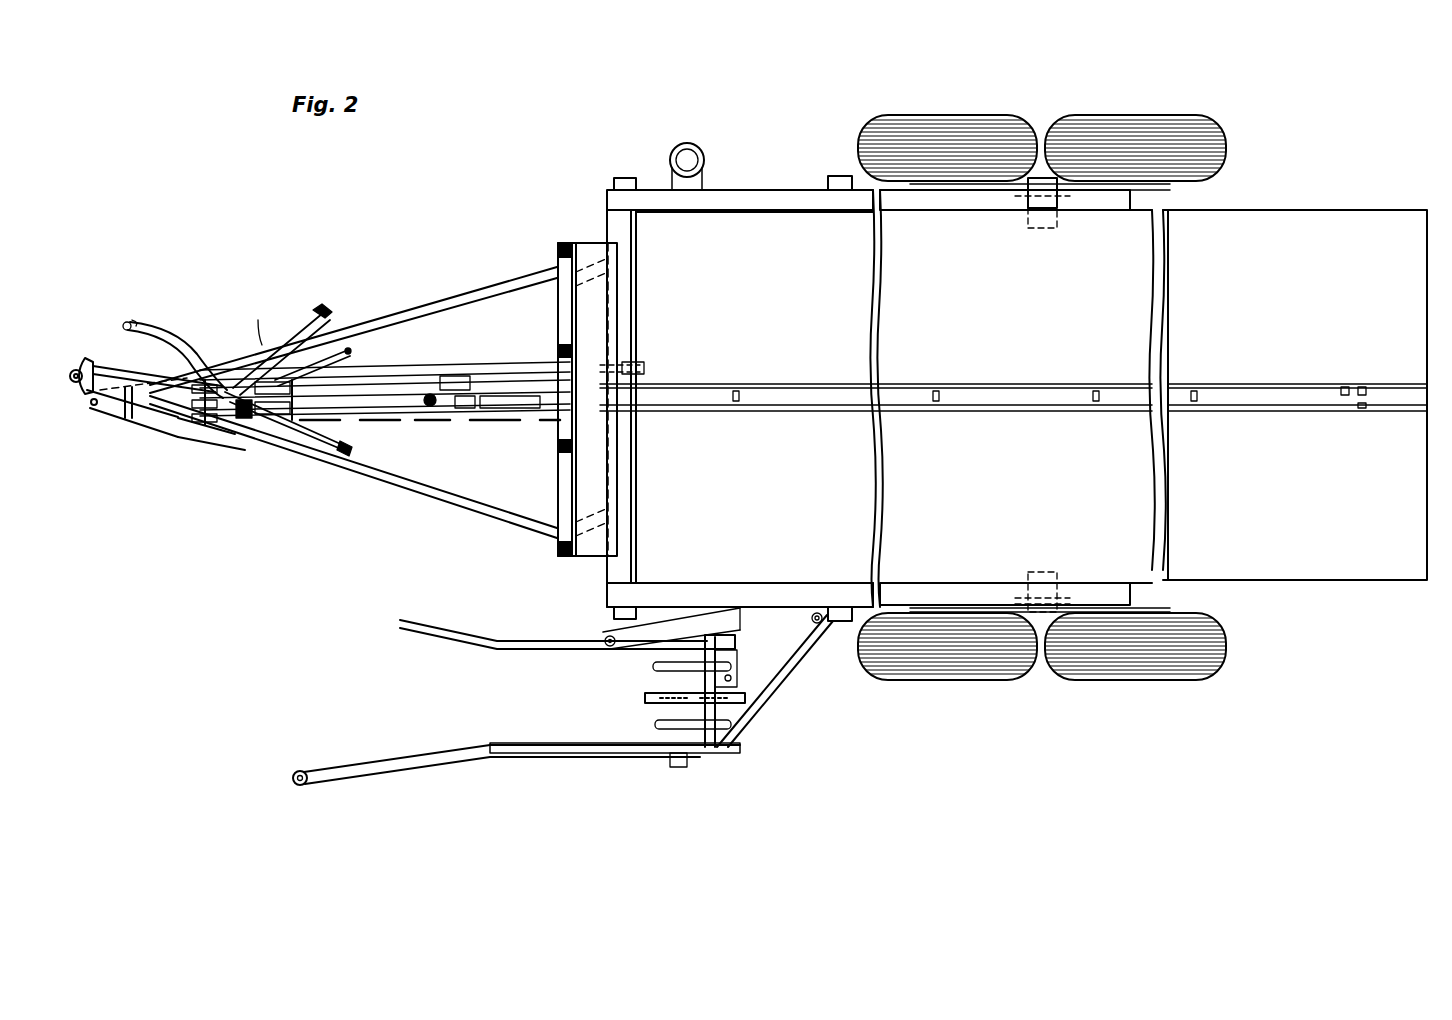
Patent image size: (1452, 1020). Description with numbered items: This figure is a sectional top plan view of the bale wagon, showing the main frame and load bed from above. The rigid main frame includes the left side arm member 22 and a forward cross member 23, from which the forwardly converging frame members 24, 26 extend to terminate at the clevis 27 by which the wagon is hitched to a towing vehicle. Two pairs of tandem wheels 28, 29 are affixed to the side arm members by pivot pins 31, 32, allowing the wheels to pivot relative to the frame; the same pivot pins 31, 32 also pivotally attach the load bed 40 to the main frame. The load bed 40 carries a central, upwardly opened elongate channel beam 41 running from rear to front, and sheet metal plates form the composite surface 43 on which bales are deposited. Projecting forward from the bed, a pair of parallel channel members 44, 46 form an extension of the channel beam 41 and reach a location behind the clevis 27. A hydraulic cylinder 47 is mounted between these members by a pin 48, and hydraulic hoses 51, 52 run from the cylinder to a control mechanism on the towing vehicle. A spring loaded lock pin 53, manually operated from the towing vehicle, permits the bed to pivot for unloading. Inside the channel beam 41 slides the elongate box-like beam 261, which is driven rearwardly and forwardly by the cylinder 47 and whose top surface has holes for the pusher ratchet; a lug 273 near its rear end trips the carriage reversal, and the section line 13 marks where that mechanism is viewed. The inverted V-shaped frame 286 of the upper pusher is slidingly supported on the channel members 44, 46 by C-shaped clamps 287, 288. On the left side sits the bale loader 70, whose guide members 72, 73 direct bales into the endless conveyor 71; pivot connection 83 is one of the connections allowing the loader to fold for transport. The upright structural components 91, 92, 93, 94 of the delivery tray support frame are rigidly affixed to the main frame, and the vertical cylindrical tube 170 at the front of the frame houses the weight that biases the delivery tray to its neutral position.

The section line 13 is at (422, 392).
The left side arm member 22 is at (670, 582).
The forward cross member 23 is at (600, 572).
The forwardly converging frame member 24 is at (476, 298).
The forwardly converging frame member 26 is at (443, 506).
The clevis 27 is at (116, 423).
The tandem wheels 28 is at (977, 118).
The tandem wheels 29 is at (945, 680).
The pivot pin 31 is at (1028, 222).
The pivot pin 32 is at (1050, 572).
The load bed 40 is at (1300, 198).
The elongate channel beam 41 is at (1259, 404).
The composite surface 43 is at (999, 471).
The channel member 44 is at (488, 374).
The channel member 46 is at (414, 398).
The hydraulic cylinder 47 is at (332, 413).
The pin 48 is at (178, 423).
The hydraulic hose 51 is at (168, 341).
The hydraulic hose 52 is at (158, 325).
The spring loaded lock pin 53 is at (640, 370).
The bale loader 70 is at (587, 695).
The endless conveyor 71 is at (645, 698).
The guide member 72 is at (442, 630).
The guide member 73 is at (405, 762).
The pivot connection 83 is at (812, 620).
The upright structural component 91 is at (836, 606).
The upright structural component 92 is at (842, 176).
The upright structural component 93 is at (612, 616).
The upright structural component 94 is at (628, 177).
The vertical cylindrical tube 170 is at (691, 146).
The elongate box-like beam 261 is at (1072, 388).
The lug 273 is at (1345, 386).
The inverted V-shaped frame 286 is at (348, 352).
The C-shaped clamp 287 is at (262, 345).
The C-shaped clamp 288 is at (260, 420).